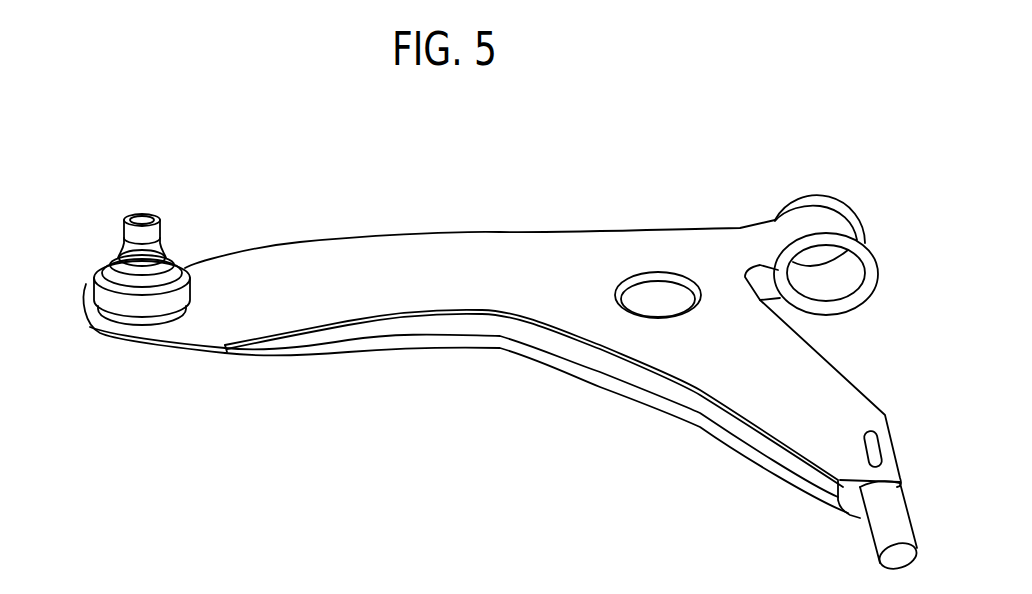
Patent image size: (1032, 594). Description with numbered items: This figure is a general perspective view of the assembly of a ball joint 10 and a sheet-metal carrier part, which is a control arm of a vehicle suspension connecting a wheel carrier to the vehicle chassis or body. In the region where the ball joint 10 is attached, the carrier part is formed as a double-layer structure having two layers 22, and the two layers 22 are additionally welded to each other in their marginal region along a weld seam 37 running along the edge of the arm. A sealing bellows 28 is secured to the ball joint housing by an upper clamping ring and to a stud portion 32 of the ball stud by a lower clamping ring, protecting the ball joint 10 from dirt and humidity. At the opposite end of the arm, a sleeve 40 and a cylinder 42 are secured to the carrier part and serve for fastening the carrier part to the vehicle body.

The ball joint 10 is at (126, 198).
The layers 22 is at (482, 248).
The sealing bellows 28 is at (112, 275).
The stud portion 32 is at (153, 237).
The weld seam 37 is at (330, 344).
The sleeve 40 is at (818, 218).
The cylinder 42 is at (882, 521).